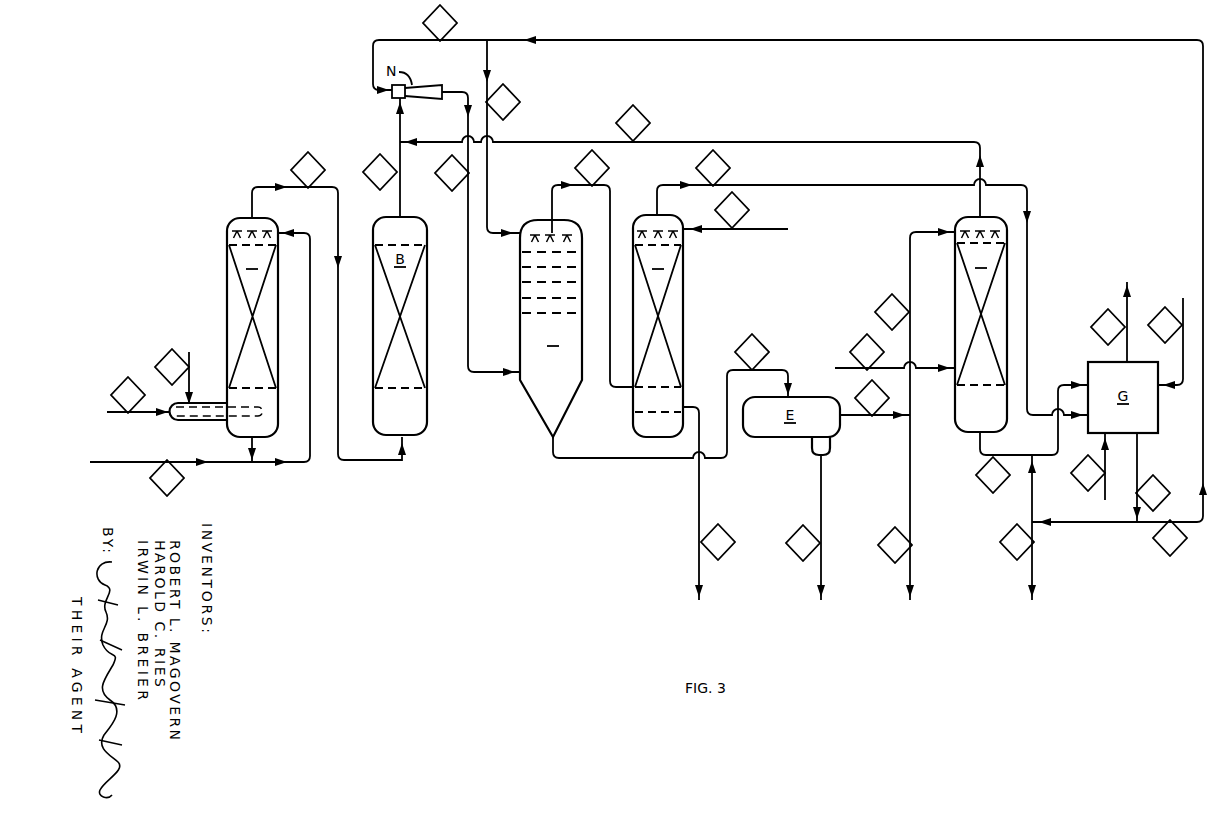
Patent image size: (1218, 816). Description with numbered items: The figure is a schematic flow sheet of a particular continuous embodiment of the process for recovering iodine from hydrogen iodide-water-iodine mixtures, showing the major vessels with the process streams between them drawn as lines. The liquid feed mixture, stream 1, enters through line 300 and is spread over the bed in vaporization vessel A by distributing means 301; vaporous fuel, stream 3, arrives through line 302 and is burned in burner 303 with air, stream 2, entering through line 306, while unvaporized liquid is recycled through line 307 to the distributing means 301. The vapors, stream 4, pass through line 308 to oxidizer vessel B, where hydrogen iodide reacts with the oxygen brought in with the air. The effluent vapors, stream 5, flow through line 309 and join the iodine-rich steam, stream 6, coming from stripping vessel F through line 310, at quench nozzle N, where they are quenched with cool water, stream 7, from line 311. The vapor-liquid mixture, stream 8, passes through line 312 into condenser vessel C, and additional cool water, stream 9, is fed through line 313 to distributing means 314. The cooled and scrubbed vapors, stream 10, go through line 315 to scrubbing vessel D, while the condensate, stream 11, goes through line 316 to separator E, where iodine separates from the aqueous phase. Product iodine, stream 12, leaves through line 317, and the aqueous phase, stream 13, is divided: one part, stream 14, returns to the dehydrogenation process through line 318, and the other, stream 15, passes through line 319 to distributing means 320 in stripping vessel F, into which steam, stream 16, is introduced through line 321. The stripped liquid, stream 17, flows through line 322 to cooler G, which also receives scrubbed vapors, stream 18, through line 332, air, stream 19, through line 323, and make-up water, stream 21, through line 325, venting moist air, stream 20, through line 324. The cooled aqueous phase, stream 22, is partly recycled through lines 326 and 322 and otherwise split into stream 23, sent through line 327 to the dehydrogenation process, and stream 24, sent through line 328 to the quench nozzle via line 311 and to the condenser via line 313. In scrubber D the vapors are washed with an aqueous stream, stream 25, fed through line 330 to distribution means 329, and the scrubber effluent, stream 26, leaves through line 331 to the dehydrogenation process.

The line 300 is at (117, 464).
The distributing means 301 is at (242, 222).
The line 302 is at (131, 416).
The burner 303 is at (197, 422).
The line 306 is at (199, 333).
The line 307 is at (268, 462).
The line 308 is at (246, 172).
The line 309 is at (398, 156).
The line 310 is at (517, 141).
The line 311 is at (470, 38).
The line 312 is at (492, 380).
The line 313 is at (490, 55).
The distributing means 314 is at (546, 232).
The line 315 is at (608, 218).
The line 316 is at (622, 462).
The line 317 is at (818, 582).
The line 318 is at (909, 582).
The line 319 is at (907, 283).
The distributing means 320 is at (975, 226).
The line 321 is at (843, 367).
The line 322 is at (976, 446).
The line 323 is at (1103, 495).
The line 324 is at (1122, 308).
The line 325 is at (1183, 306).
The line 326 is at (1103, 528).
The line 327 is at (1030, 572).
The line 328 is at (1201, 470).
The distribution means 329 is at (653, 222).
The line 330 is at (713, 233).
The line 331 is at (697, 578).
The line 332 is at (762, 183).
The feed mixture stream 1 is at (167, 478).
The air stream 2 is at (172, 367).
The vaporous fuel stream 3 is at (128, 395).
The vapors stream 4 is at (308, 170).
The effluent vapors stream 5 is at (380, 172).
The iodine-rich steam stream 6 is at (633, 123).
The cool water stream 7 is at (440, 23).
The vapor-liquid mixture stream 8 is at (452, 173).
The additional cool water stream 9 is at (503, 102).
The cooled and scrubbed vapors stream 10 is at (592, 168).
The condensate stream 11 is at (752, 352).
The product iodine stream 12 is at (803, 543).
The aqueous phase stream 13 is at (875, 399).
The aqueous phase return stream 14 is at (895, 545).
The aqueous phase stripping stream 15 is at (892, 312).
The steam stream 16 is at (867, 352).
The stripped aqueous liquid stream 17 is at (993, 475).
The scrubbed vapors stream 18 is at (713, 168).
The air stream to cooler 19 is at (1088, 473).
The moist air stream 20 is at (1108, 327).
The make-up water stream 21 is at (1165, 325).
The cooled aqueous phase stream 22 is at (1151, 477).
The cooled aqueous phase stream to dehydrogenation 23 is at (1017, 542).
The cooled aqueous phase stream to quench and condenser 24 is at (1170, 538).
The aqueous scrubbing stream 25 is at (732, 210).
The scrubber liquid effluent stream 26 is at (718, 542).